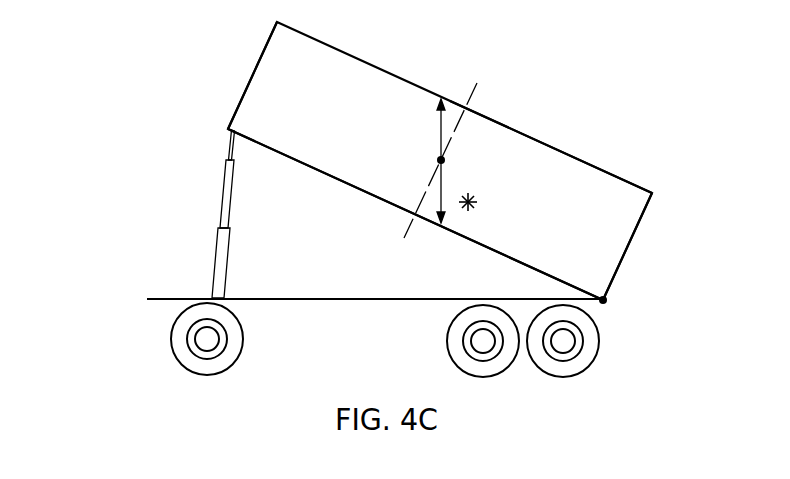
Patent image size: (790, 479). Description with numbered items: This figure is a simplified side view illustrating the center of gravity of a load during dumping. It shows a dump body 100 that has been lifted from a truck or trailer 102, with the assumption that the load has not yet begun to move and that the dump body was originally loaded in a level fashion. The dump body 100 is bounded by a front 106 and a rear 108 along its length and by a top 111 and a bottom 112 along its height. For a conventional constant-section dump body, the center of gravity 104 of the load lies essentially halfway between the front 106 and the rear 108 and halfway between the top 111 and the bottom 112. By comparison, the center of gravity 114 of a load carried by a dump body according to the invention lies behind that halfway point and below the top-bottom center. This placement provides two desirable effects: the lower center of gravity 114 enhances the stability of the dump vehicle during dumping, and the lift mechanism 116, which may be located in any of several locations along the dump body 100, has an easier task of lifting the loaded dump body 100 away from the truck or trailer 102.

The dump body 100 is at (323, 43).
The truck or trailer 102 is at (177, 298).
The center of gravity 104 is at (437, 160).
The front 106 is at (252, 72).
The rear 108 is at (632, 243).
The top 111 is at (562, 150).
The bottom 112 is at (340, 180).
The center of gravity 114 is at (474, 202).
The lift mechanism 116 is at (215, 252).